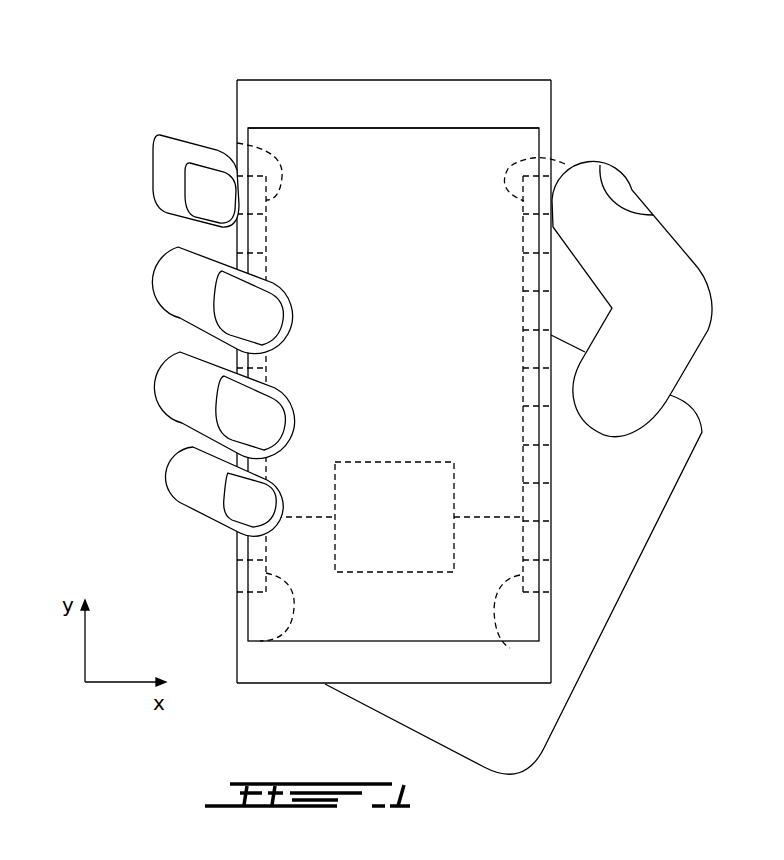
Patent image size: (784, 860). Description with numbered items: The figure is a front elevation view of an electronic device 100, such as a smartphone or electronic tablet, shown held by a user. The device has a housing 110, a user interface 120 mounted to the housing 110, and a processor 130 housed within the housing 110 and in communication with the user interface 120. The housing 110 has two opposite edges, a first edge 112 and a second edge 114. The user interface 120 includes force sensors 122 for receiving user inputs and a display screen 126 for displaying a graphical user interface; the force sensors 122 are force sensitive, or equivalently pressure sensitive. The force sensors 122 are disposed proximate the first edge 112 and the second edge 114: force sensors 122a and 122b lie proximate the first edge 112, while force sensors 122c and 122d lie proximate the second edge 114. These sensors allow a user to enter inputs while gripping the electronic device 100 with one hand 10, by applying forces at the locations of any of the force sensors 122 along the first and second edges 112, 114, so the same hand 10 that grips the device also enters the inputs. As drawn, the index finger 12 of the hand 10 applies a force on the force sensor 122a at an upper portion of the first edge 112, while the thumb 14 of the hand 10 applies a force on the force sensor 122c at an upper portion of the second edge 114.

The electronic device 100 is at (394, 380).
The housing 110 is at (328, 102).
The first edge 112 is at (235, 95).
The second edge 114 is at (552, 142).
The user interface 120 is at (531, 125).
The force sensors 122 is at (524, 273).
The force sensor 122a is at (237, 143).
The force sensor 122b is at (237, 640).
The force sensor 122c is at (565, 164).
The force sensor 122d is at (510, 648).
The display screen 126 is at (407, 150).
The processor 130 is at (394, 517).
The hand 10 is at (610, 580).
The index finger 12 is at (153, 173).
The thumb 14 is at (682, 283).